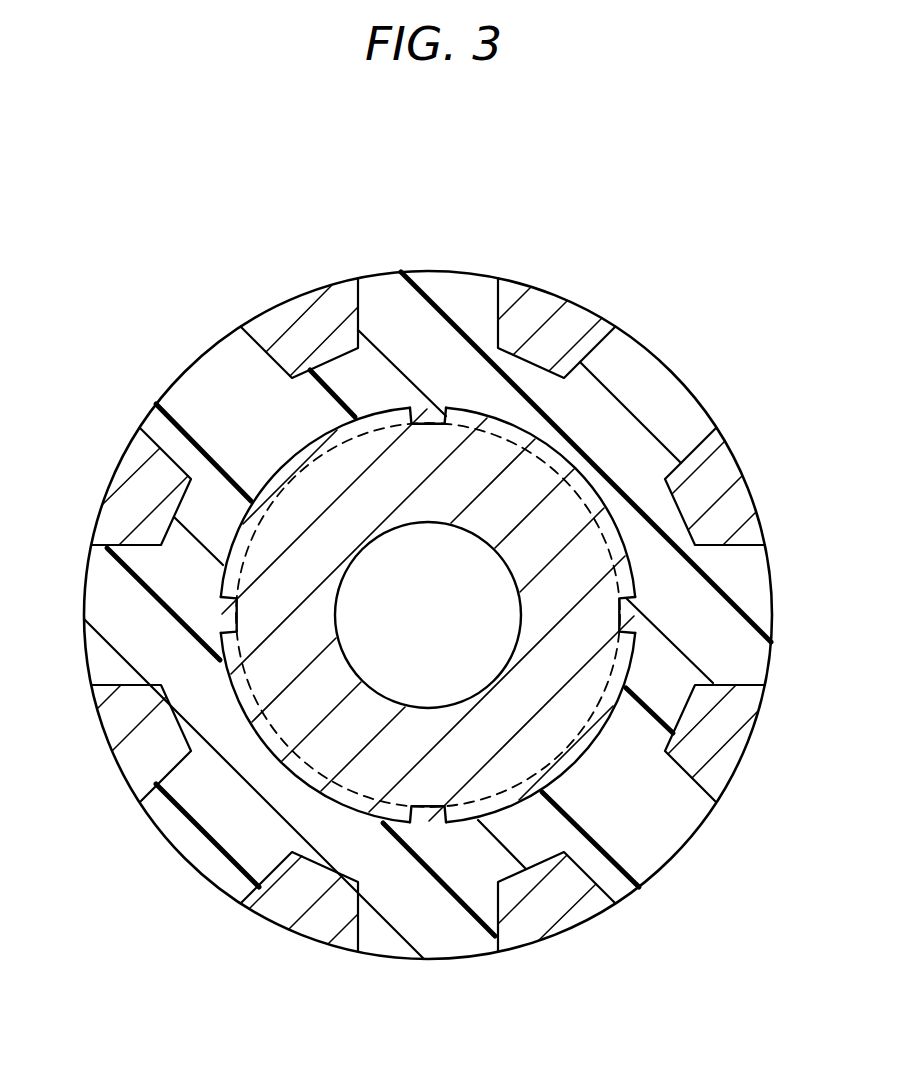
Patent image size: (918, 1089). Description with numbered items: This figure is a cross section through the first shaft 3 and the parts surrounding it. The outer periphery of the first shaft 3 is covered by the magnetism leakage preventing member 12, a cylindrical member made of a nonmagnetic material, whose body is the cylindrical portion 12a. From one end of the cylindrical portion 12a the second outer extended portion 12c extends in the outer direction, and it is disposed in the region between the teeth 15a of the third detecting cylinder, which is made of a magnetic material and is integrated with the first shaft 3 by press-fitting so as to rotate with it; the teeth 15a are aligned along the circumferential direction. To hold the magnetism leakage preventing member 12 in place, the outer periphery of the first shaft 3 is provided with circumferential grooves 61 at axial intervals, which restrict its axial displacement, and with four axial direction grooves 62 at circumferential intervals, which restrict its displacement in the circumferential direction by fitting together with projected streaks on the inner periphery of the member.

The first shaft 3 is at (545, 470).
The magnetism leakage preventing member 12 is at (390, 372).
The cylindrical portion 12a is at (243, 440).
The second outer extended portion 12c is at (488, 302).
The teeth 15a is at (312, 318).
The circumferential grooves 61 is at (498, 420).
The axial direction grooves 62 is at (445, 410).